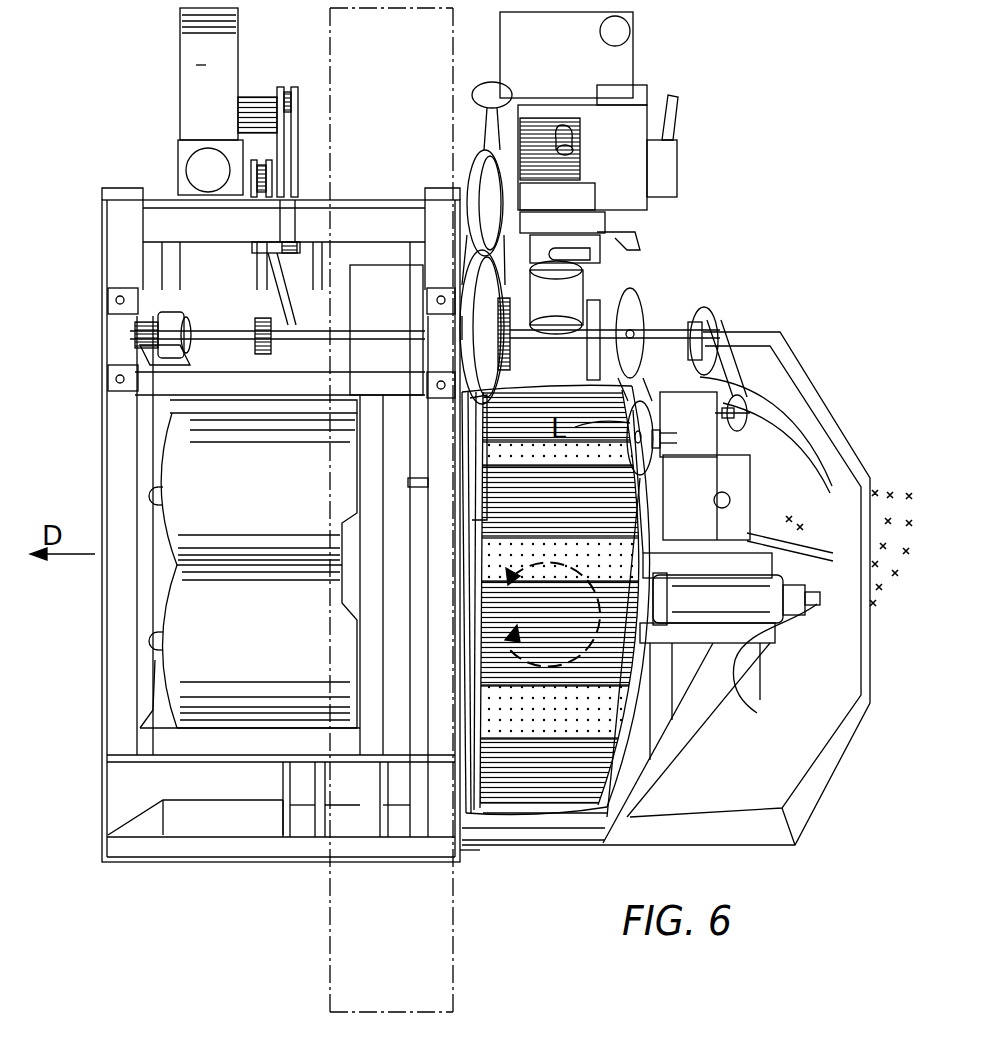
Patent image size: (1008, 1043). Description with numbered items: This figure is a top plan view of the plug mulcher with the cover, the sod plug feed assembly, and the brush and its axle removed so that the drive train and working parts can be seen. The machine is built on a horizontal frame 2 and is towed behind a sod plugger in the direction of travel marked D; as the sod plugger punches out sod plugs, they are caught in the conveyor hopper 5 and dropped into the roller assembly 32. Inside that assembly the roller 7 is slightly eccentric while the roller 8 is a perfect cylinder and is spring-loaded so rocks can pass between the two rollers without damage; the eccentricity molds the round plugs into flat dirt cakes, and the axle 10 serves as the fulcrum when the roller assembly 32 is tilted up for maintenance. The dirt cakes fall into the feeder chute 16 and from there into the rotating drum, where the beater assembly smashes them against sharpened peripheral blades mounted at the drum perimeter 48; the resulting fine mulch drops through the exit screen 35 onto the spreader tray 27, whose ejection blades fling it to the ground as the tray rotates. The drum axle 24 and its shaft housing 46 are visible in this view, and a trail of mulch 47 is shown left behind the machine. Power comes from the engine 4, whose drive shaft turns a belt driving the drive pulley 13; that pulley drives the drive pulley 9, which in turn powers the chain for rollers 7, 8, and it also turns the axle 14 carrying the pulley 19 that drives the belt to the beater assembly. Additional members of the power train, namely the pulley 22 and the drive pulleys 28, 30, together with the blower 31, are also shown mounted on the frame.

The horizontal frame 2 is at (820, 797).
The engine 4 is at (628, 153).
The conveyor hopper 5 is at (342, 906).
The roller 7 is at (258, 642).
The roller 8 is at (258, 497).
The drive pulley 9 is at (427, 318).
The axle 10 is at (244, 335).
The drive pulley 13 is at (466, 165).
The axle 14 is at (300, 182).
The feeder chute 16 is at (561, 599).
The pulley 19 is at (250, 178).
The pulley 22 is at (665, 298).
The drum axle 24 is at (722, 610).
The spreader tray 27 is at (780, 468).
The drive pulley 28 is at (738, 398).
The drive pulley 30 is at (733, 315).
The blower 31 is at (228, 63).
The roller assembly 32 is at (118, 444).
The exit screen 35 is at (578, 554).
The shaft housing 46 is at (775, 669).
The mulch 47 is at (807, 514).
The drum perimeter 48 is at (538, 855).